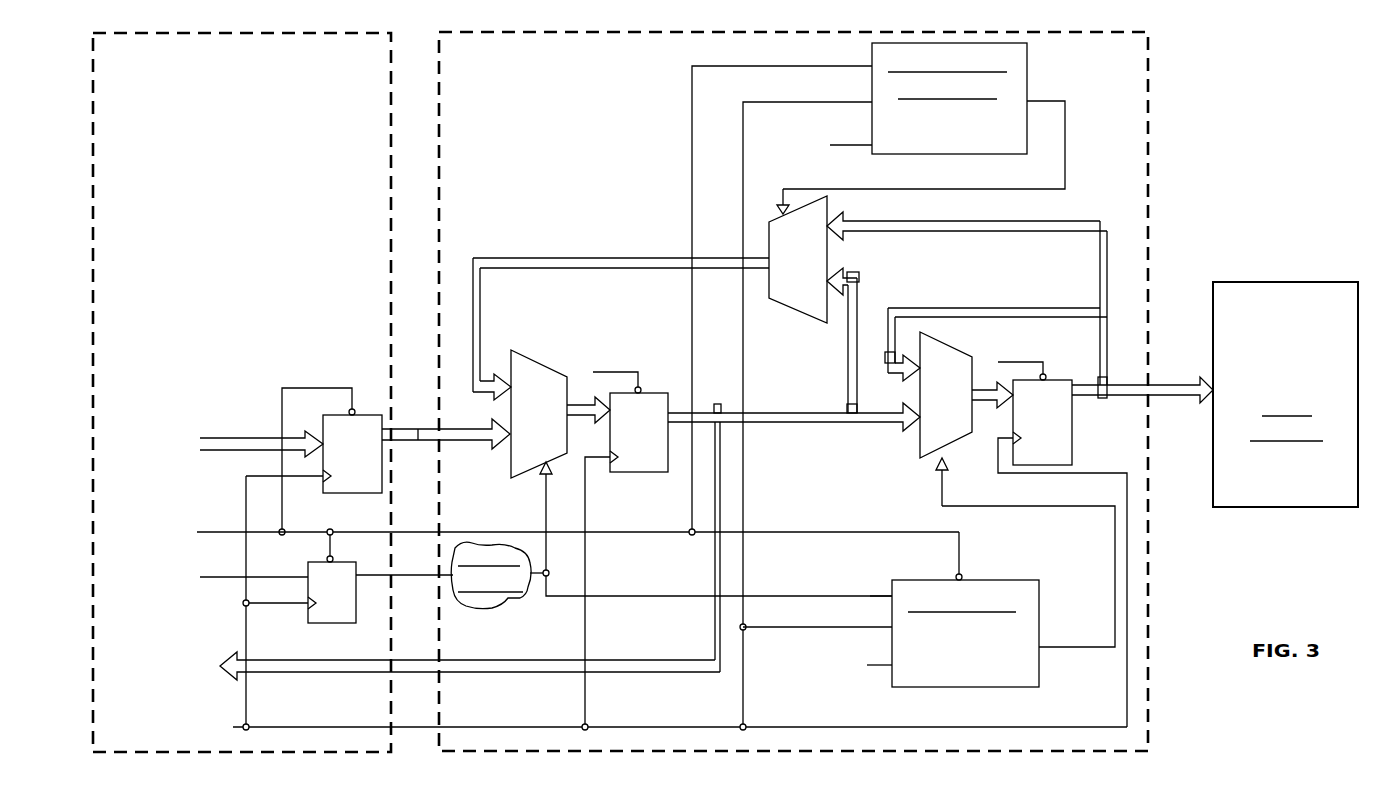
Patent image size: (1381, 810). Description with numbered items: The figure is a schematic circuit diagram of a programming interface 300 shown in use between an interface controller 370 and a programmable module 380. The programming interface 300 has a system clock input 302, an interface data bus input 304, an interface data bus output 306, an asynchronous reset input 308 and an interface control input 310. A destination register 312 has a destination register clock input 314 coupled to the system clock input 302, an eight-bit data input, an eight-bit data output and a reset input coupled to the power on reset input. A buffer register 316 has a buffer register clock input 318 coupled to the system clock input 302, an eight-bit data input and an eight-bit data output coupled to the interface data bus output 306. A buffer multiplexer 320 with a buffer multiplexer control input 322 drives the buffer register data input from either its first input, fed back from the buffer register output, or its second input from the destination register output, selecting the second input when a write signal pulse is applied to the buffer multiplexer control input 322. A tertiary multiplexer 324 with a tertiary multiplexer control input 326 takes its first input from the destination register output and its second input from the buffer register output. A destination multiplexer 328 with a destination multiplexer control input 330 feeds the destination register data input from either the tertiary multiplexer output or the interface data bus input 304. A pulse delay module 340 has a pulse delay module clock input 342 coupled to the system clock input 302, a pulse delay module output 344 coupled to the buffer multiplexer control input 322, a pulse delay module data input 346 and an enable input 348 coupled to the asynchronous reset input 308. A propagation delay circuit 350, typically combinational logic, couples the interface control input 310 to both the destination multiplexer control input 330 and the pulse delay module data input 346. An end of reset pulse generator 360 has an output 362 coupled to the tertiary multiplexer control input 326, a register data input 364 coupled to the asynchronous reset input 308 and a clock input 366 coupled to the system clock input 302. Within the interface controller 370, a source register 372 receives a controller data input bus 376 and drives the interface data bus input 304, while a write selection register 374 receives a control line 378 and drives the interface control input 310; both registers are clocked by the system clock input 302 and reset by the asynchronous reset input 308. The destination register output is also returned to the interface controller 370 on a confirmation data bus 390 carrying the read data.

The programming interface 300 is at (499, 77).
The system clock input 302 is at (438, 728).
The interface data bus input 304 is at (437, 425).
The interface data bus output 306 is at (1150, 398).
The asynchronous reset input 308 is at (438, 532).
The interface control input 310 is at (438, 580).
The destination register 312 is at (637, 473).
The destination register clock input 314 is at (613, 452).
The buffer register 316 is at (1070, 435).
The buffer register clock input 318 is at (1015, 440).
The buffer multiplexer 320 is at (918, 448).
The buffer multiplexer control input 322 is at (943, 447).
The tertiary multiplexer 324 is at (792, 308).
The tertiary multiplexer control input 326 is at (782, 212).
The destination multiplexer 328 is at (525, 353).
The destination multiplexer control input 330 is at (543, 460).
The pulse delay module 340 is at (981, 664).
The pulse delay module clock input 342 is at (890, 625).
The pulse delay module output 344 is at (1040, 647).
The pulse delay module data input 346 is at (890, 593).
The enable input 348 is at (962, 573).
The propagation delay circuit 350 is at (512, 598).
The end of reset pulse generator 360 is at (965, 139).
The output 362 is at (1027, 98).
The register data input 364 is at (870, 68).
The clock input 366 is at (870, 102).
The interface controller 370 is at (239, 77).
The source register 372 is at (350, 493).
The write selection register 374 is at (343, 623).
The controller data input bus 376 is at (242, 437).
The control line 378 is at (212, 577).
The programmable module 380 is at (1302, 364).
The confirmation data bus 390 is at (333, 667).